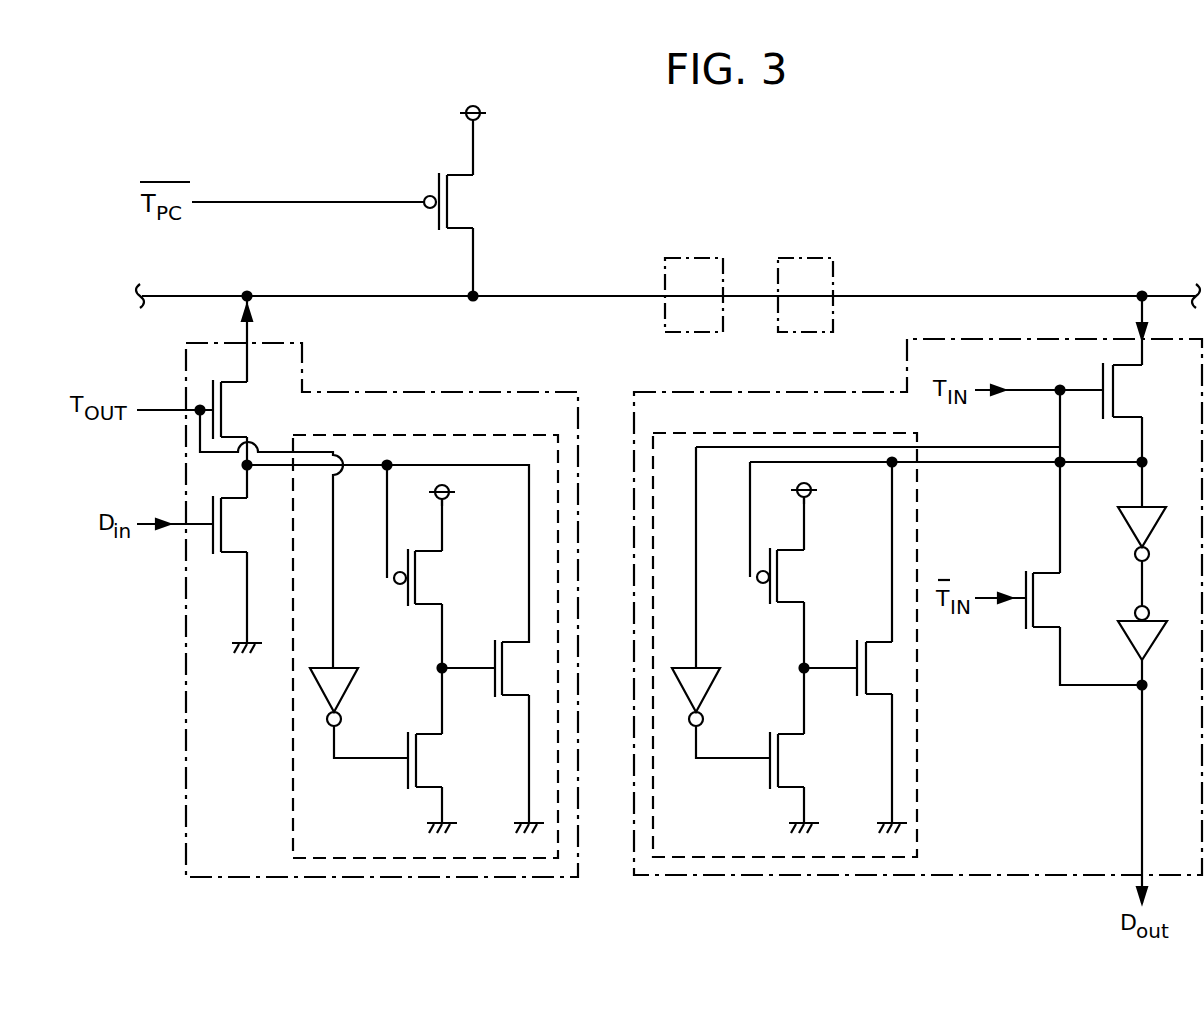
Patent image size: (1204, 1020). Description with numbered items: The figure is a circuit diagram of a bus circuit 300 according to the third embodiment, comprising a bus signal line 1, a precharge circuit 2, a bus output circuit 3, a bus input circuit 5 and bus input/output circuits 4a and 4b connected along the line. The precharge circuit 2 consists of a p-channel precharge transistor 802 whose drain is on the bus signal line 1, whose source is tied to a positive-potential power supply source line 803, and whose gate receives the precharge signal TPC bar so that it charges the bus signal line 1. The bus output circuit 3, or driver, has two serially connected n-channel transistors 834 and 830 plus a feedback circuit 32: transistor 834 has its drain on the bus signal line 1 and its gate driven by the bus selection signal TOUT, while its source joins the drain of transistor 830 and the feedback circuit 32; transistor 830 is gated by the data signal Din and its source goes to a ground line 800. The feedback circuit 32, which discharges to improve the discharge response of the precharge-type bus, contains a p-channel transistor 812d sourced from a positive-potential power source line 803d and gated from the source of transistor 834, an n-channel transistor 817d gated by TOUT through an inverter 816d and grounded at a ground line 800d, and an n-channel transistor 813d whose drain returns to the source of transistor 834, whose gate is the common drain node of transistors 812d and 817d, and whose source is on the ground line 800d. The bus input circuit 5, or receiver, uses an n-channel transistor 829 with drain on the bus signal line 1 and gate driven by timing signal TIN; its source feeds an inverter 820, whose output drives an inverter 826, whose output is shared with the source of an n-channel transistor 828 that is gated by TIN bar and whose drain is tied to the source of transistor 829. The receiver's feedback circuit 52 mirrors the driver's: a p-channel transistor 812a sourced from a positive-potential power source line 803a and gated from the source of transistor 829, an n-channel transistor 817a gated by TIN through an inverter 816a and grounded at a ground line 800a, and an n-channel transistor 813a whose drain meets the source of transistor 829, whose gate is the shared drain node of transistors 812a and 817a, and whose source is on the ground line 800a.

The bus signal line 1 is at (1026, 290).
The precharge circuit 2 is at (488, 204).
The bus output circuit 3 is at (424, 880).
The bus input circuit 5 is at (855, 877).
The bus input/output circuit 4a is at (680, 256).
The bus input/output circuit 4b is at (793, 256).
The feedback circuit 32 is at (452, 434).
The feedback circuit 52 is at (814, 434).
The bus circuit 300 is at (982, 206).
The ground line 800 is at (240, 654).
The ground line 800a is at (856, 822).
The ground line 800d is at (494, 822).
The precharge transistor 802 is at (432, 186).
The positive-potential power supply source line 803 is at (484, 108).
The positive-potential power source line 803a is at (812, 487).
The positive-potential power source line 803d is at (450, 487).
The p-channel transistor 812a is at (788, 576).
The p-channel transistor 812d is at (424, 578).
The n-channel transistor 813a is at (858, 646).
The n-channel transistor 813d is at (494, 648).
The inverter 816a is at (706, 706).
The inverter 816d is at (344, 706).
The n-channel transistor 817a is at (784, 760).
The n-channel transistor 817d is at (424, 760).
The inverter 820 is at (1154, 504).
The inverter 826 is at (1152, 612).
The n-channel transistor 828 is at (1046, 550).
The n-channel transistor 829 is at (1102, 372).
The n-channel transistor 830 is at (214, 554).
The n-channel transistor 834 is at (244, 410).